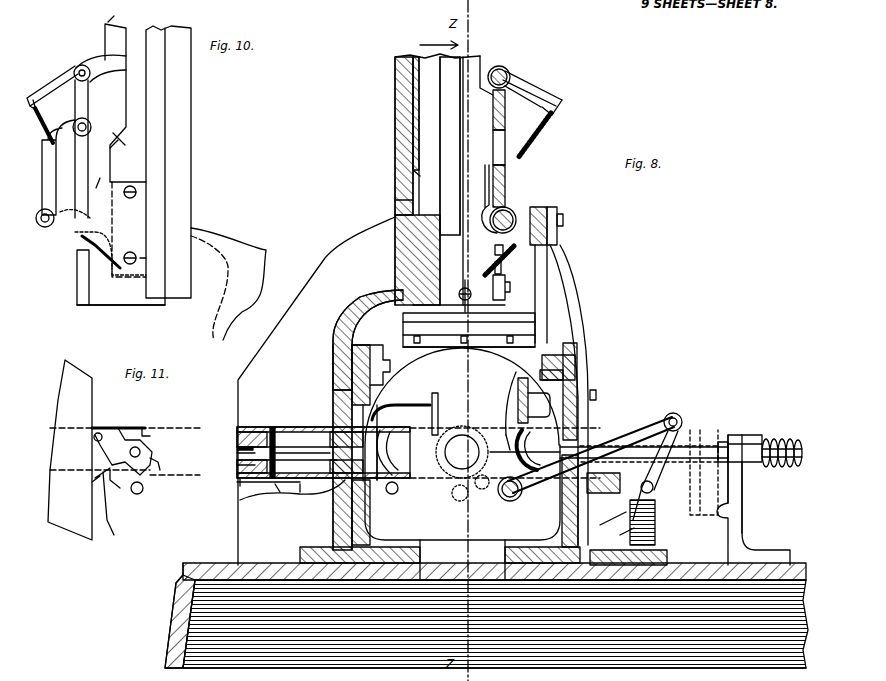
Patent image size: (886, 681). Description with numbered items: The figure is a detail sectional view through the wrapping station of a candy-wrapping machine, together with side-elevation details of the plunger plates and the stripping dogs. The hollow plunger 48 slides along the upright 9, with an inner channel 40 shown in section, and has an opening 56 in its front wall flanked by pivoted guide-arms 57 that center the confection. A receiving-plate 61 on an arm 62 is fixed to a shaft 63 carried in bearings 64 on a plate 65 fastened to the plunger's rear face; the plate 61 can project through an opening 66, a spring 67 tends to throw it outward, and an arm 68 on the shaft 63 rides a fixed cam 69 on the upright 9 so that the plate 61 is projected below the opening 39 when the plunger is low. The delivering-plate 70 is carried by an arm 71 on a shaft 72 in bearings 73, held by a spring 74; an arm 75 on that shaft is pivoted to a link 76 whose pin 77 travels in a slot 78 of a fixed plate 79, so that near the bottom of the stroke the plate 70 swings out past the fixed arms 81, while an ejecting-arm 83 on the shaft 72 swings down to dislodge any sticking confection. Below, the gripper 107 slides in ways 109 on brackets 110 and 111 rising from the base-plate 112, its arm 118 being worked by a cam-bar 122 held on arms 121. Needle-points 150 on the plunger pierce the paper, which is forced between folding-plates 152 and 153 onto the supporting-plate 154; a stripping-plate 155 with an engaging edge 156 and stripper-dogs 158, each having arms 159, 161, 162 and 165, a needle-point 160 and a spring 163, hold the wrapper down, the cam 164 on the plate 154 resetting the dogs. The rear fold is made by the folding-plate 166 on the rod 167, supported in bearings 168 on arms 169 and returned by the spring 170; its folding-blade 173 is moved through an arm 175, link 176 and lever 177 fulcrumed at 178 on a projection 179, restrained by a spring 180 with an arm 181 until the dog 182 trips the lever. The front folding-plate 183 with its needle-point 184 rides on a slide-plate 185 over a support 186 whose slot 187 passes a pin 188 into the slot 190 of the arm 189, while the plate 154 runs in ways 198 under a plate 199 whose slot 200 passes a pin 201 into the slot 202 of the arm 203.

In FIG. 10, the upright 9 is at (165, 103).
In FIG. 8, the upright 9 is at (395, 110).
In FIG. 8, the opening 39 is at (395, 198).
In FIG. 8, the channel 40 is at (426, 181).
In FIG. 10, the plunger 48 is at (106, 22).
In FIG. 8, the plunger 48 is at (405, 232).
In FIG. 8, the opening 56 is at (420, 182).
In FIG. 8, the guide-arm 57 is at (456, 138).
In FIG. 8, the receiving-plate 61 is at (540, 130).
In FIG. 8, the arm 62 is at (555, 98).
In FIG. 10, the shaft 63 is at (76, 68).
In FIG. 8, the shaft 63 is at (502, 68).
In FIG. 10, the bearings 64 is at (64, 92).
In FIG. 8, the bearings 64 is at (523, 99).
In FIG. 10, the plate 65 is at (78, 285).
In FIG. 8, the plate 65 is at (493, 106).
In FIG. 8, the opening 66 is at (494, 150).
In FIG. 8, the spring 67 is at (522, 82).
In FIG. 10, the arm 68 is at (97, 55).
In FIG. 10, the fixed cam 69 is at (114, 131).
In FIG. 10, the delivering-plate 70 is at (105, 262).
In FIG. 8, the delivering-plate 70 is at (478, 270).
In FIG. 10, the arm 71 is at (68, 240).
In FIG. 8, the arm 71 is at (505, 256).
In FIG. 8, the shaft 72 is at (510, 214).
In FIG. 8, the bearings 73 is at (511, 266).
In FIG. 8, the spring 74 is at (496, 232).
In FIG. 10, the arm 75 is at (52, 230).
In FIG. 10, the link 76 is at (42, 178).
In FIG. 10, the pin 77 is at (90, 118).
In FIG. 10, the slot 78 is at (107, 148).
In FIG. 10, the fixed plate 79 is at (103, 174).
In FIG. 8, the fixed arms 81 is at (504, 290).
In FIG. 8, the ejecting-arm 83 is at (485, 190).
In FIG. 8, the gripper 107 is at (398, 342).
In FIG. 8, the ways 109 is at (578, 356).
In FIG. 8, the bracket 110 is at (372, 512).
In FIG. 8, the bracket 111 is at (562, 506).
In FIG. 8, the base-plate 112 is at (522, 540).
In FIG. 8, the arm 118 is at (548, 270).
In FIG. 8, the arms 121 is at (578, 300).
In FIG. 8, the cam-bar 122 is at (556, 212).
In FIG. 8, the needle-points 150 is at (466, 312).
In FIG. 8, the folding-plate 152 is at (438, 412).
In FIG. 8, the folding-plate 153 is at (516, 398).
In FIG. 11, the supporting-plate 154 is at (108, 510).
In FIG. 8, the supporting-plate 154 is at (382, 462).
In FIG. 8, the stripping-plate 155 is at (512, 382).
In FIG. 8, the engaging edge 156 is at (493, 430).
In FIG. 11, the stripper-dogs 158 is at (146, 452).
In FIG. 8, the stripper-dogs 158 is at (450, 470).
In FIG. 11, the arm 159 is at (147, 436).
In FIG. 11, the needle-point 160 is at (146, 426).
In FIG. 11, the arm 161 is at (158, 462).
In FIG. 8, the arm 161 is at (454, 467).
In FIG. 11, the arm 162 is at (117, 482).
In FIG. 8, the arm 162 is at (525, 441).
In FIG. 11, the spring 163 is at (118, 426).
In FIG. 11, the cam 164 is at (92, 484).
In FIG. 8, the cam 164 is at (320, 520).
In FIG. 11, the arm 165 is at (138, 494).
In FIG. 8, the folding-plate 166 is at (542, 445).
In FIG. 8, the rod 167 is at (712, 448).
In FIG. 8, the bearings 168 is at (752, 436).
In FIG. 8, the arms 169 is at (756, 540).
In FIG. 8, the spring 170 is at (782, 432).
In FIG. 8, the folding-blade 173 is at (530, 452).
In FIG. 8, the arm 175 is at (502, 494).
In FIG. 8, the link 176 is at (552, 476).
In FIG. 8, the lever 177 is at (682, 420).
In FIG. 8, the fulcrum 178 is at (640, 490).
In FIG. 8, the projection 179 is at (644, 459).
In FIG. 8, the spring 180 is at (656, 532).
In FIG. 8, the arm 181 is at (617, 528).
In FIG. 8, the dog 182 is at (732, 494).
In FIG. 8, the front folding-plate 183 is at (505, 445).
In FIG. 8, the needle-point 184 is at (452, 444).
In FIG. 8, the slide-plate 185 is at (320, 426).
In FIG. 8, the support 186 is at (248, 426).
In FIG. 8, the slot 187 is at (296, 426).
In FIG. 8, the pin 188 is at (272, 426).
In FIG. 8, the arm 189 is at (231, 440).
In FIG. 8, the slot 190 is at (270, 452).
In FIG. 8, the ways 198 is at (279, 493).
In FIG. 8, the plate 199 is at (254, 484).
In FIG. 8, the slot 200 is at (310, 486).
In FIG. 8, the pin 201 is at (302, 463).
In FIG. 8, the slot 202 is at (232, 454).
In FIG. 8, the arm 203 is at (232, 466).